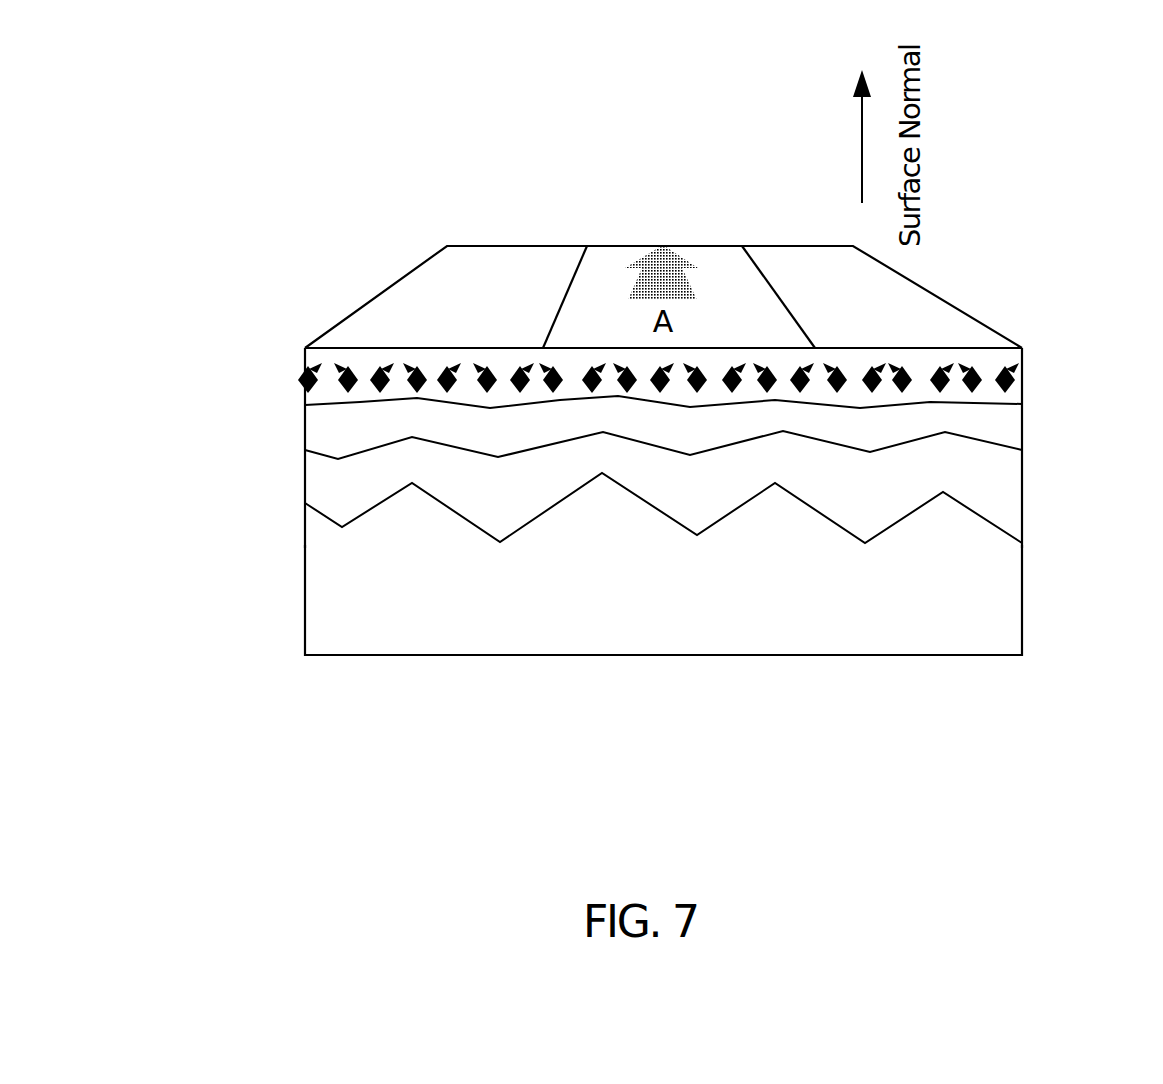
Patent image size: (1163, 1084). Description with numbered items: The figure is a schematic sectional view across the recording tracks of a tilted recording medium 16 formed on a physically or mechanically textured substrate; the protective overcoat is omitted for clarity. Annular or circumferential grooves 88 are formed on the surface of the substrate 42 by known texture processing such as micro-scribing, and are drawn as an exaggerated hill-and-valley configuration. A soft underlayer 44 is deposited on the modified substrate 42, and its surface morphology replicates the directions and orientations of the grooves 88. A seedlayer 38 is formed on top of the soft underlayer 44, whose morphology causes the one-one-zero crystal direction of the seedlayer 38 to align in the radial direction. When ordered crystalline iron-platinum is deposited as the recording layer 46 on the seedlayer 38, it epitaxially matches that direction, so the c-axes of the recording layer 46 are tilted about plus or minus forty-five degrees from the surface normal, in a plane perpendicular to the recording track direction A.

The tilted recording medium 16 is at (272, 532).
The tilted recording layer 46 is at (985, 368).
The seedlayer 38 is at (1002, 435).
The soft underlayer 44 is at (1003, 492).
The circumferential grooves 88 is at (998, 528).
The substrate 42 is at (995, 600).